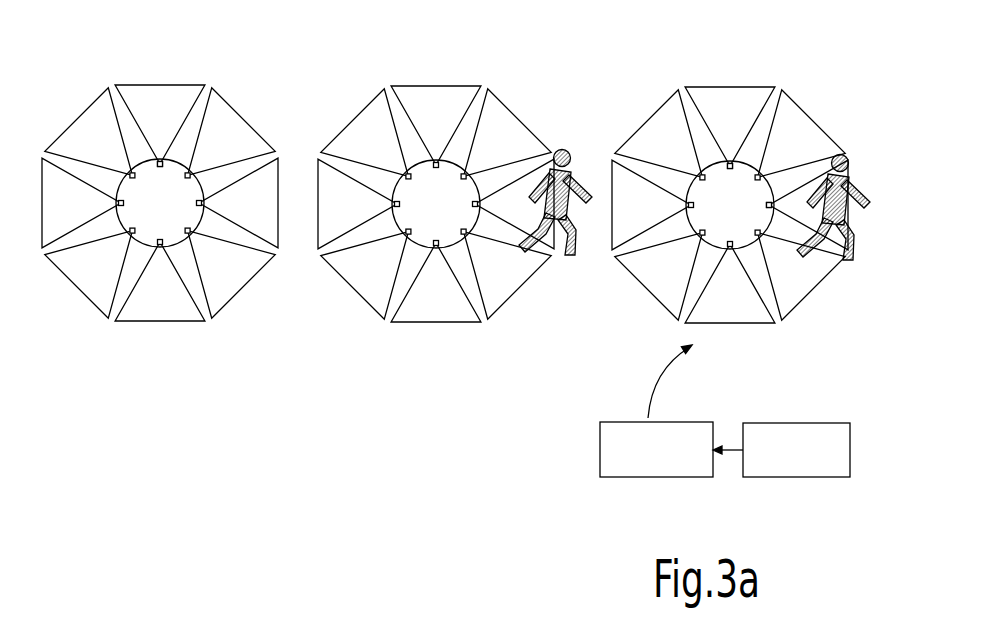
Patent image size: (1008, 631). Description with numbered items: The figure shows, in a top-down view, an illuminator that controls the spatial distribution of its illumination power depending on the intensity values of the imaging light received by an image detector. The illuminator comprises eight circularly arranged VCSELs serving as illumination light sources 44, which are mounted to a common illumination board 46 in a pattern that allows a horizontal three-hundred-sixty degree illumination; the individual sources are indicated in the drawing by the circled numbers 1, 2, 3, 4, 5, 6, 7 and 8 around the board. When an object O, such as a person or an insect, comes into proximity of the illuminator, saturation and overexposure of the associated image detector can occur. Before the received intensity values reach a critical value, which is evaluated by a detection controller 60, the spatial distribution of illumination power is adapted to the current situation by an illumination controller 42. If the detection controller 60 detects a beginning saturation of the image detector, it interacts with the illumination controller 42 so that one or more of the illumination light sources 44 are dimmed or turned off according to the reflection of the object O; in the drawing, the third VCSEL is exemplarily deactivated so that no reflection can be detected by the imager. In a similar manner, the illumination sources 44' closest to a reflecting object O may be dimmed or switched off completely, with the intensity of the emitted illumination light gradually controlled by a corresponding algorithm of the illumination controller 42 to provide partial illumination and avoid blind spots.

The sensor segment 1 is at (445, 127).
The sensor segment 2 is at (515, 134).
The sensor segment 3 is at (523, 204).
The sensor segment 4 is at (515, 274).
The sensor segment 5 is at (445, 282).
The sensor segment 6 is at (375, 274).
The sensor segment 7 is at (368, 204).
The sensor segment 8 is at (375, 134).
The illumination light source 44 is at (498, 90).
The illumination source closest to the walls 44' is at (826, 146).
The common illumination board 46 is at (162, 205).
The illumination controller 42 is at (656, 411).
The detection controller 60 is at (781, 450).
The object O is at (567, 148).